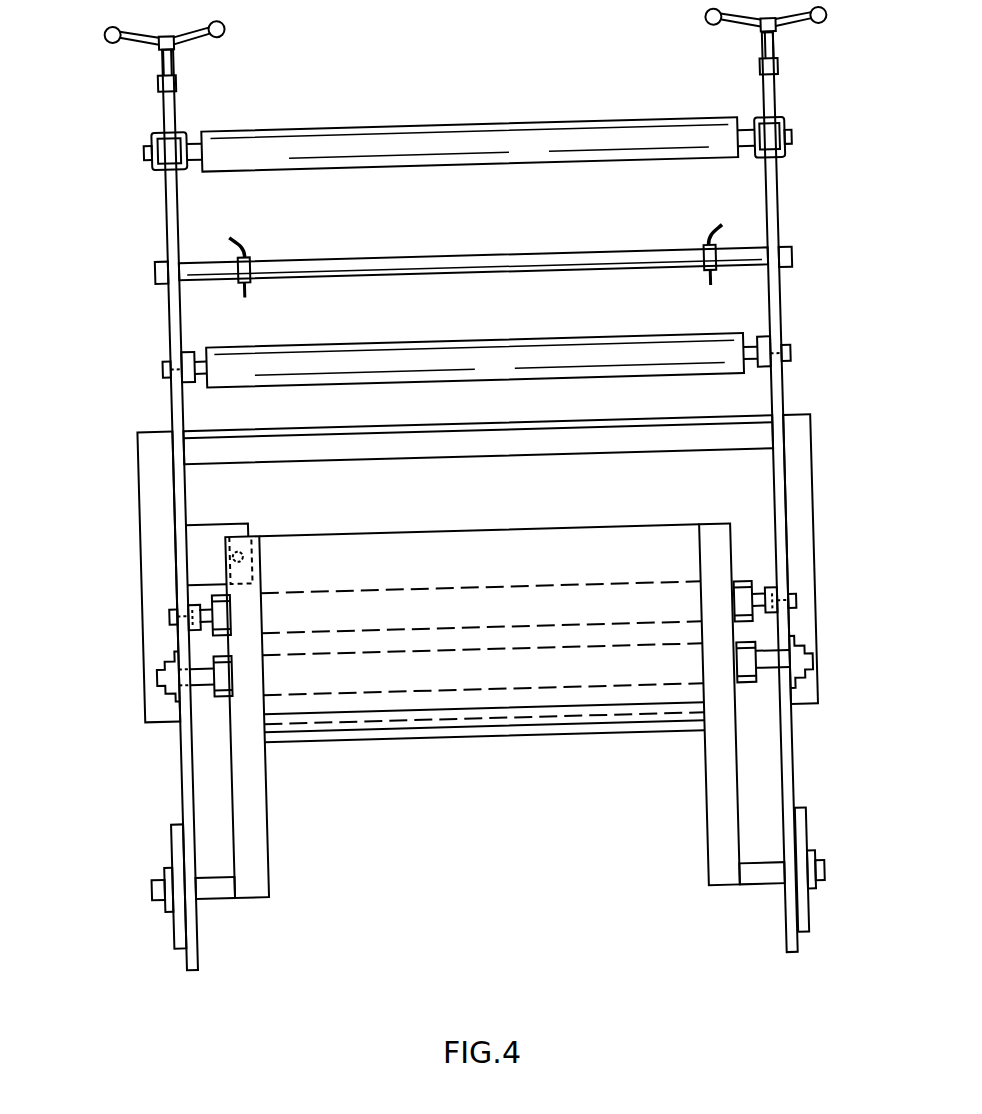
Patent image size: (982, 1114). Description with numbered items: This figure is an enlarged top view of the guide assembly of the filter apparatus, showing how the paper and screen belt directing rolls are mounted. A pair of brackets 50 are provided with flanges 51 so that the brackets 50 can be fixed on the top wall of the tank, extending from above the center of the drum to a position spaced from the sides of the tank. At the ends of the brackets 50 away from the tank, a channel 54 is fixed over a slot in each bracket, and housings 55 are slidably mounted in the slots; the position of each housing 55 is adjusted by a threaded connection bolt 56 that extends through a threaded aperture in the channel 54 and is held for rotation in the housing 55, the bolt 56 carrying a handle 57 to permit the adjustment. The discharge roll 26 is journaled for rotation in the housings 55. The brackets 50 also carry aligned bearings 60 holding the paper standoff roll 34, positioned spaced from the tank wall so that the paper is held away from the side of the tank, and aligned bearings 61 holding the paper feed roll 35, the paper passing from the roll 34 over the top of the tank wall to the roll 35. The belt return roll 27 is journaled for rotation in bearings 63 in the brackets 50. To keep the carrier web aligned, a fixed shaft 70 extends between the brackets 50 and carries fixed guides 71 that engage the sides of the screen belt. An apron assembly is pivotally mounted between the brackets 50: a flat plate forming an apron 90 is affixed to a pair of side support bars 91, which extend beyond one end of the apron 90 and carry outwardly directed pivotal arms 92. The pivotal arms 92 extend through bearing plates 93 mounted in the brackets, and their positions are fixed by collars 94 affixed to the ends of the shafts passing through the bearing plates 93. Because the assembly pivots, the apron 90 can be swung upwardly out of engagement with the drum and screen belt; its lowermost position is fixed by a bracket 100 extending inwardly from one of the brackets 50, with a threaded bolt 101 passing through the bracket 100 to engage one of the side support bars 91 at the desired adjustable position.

The discharge roll 26 is at (482, 126).
The belt return roll 27 is at (741, 697).
The paper standoff roll 34 is at (462, 337).
The paper feed roll 35 is at (740, 586).
The brackets 50 is at (176, 762).
The flanges 51 is at (145, 613).
The channel 54 is at (190, 74).
The housings 55 is at (171, 161).
The threaded connection bolts 56 is at (177, 49).
The handles 57 is at (219, 32).
The bearings 60 is at (196, 342).
The bearings 61 is at (189, 597).
The bearings 63 is at (159, 691).
The fixed shaft 70 is at (363, 259).
The fixed guides 71 is at (258, 248).
The apron 90 is at (421, 534).
The side support bars 91 is at (255, 810).
The pivotal arms 92 is at (205, 896).
The bearing plates 93 is at (165, 919).
The collars 94 is at (152, 865).
The bracket 100 is at (214, 518).
The threaded bolt 101 is at (257, 530).